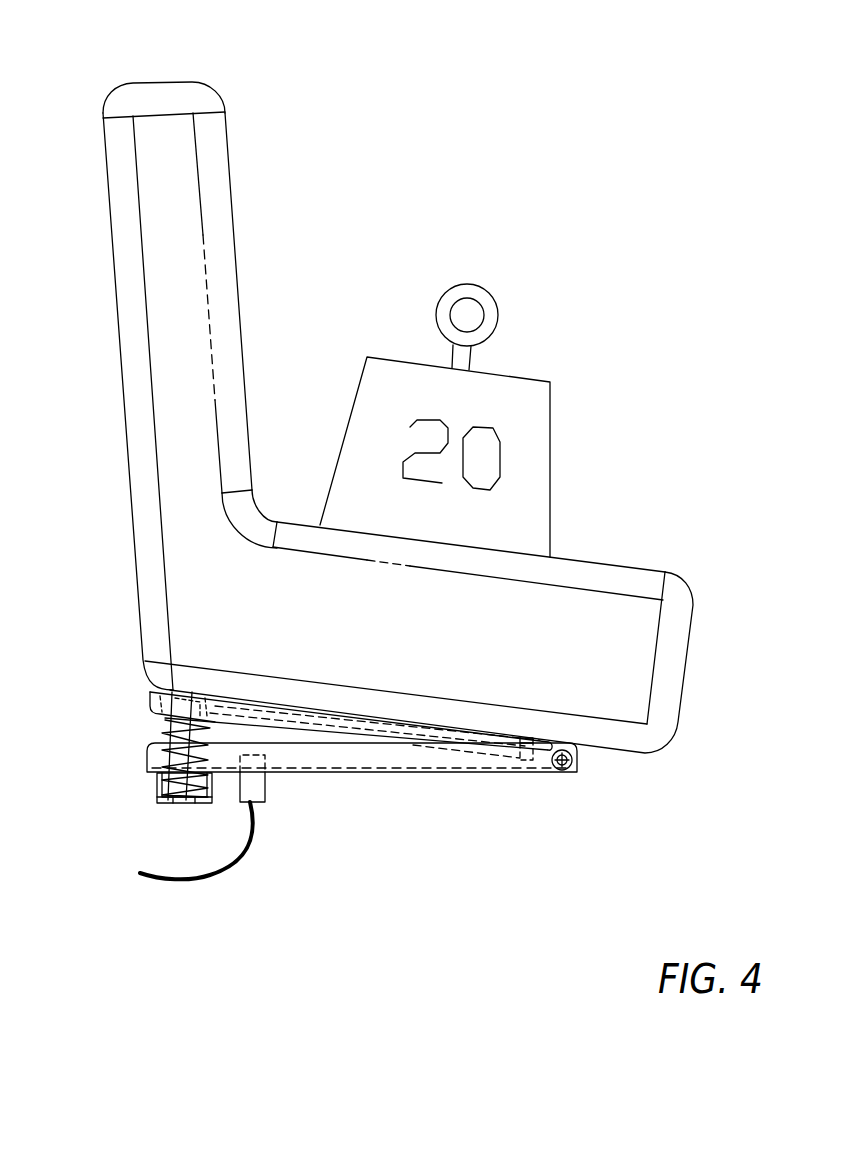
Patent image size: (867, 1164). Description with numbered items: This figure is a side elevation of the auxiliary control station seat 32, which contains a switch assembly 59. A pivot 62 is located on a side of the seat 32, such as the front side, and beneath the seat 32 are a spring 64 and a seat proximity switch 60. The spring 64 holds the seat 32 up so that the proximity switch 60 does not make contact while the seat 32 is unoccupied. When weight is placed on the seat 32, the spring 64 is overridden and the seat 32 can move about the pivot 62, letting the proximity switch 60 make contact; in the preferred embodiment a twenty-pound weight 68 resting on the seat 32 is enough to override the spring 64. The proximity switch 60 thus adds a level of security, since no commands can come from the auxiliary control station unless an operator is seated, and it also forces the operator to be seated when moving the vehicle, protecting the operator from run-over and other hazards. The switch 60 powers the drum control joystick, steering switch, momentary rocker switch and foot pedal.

The auxiliary control seat 32 is at (215, 88).
The weight of 20 lbs 68 is at (535, 378).
The switch assembly 59 is at (497, 827).
The spring 64 is at (165, 738).
The seat proximity switch 60 is at (265, 802).
The pivot 62 is at (563, 763).